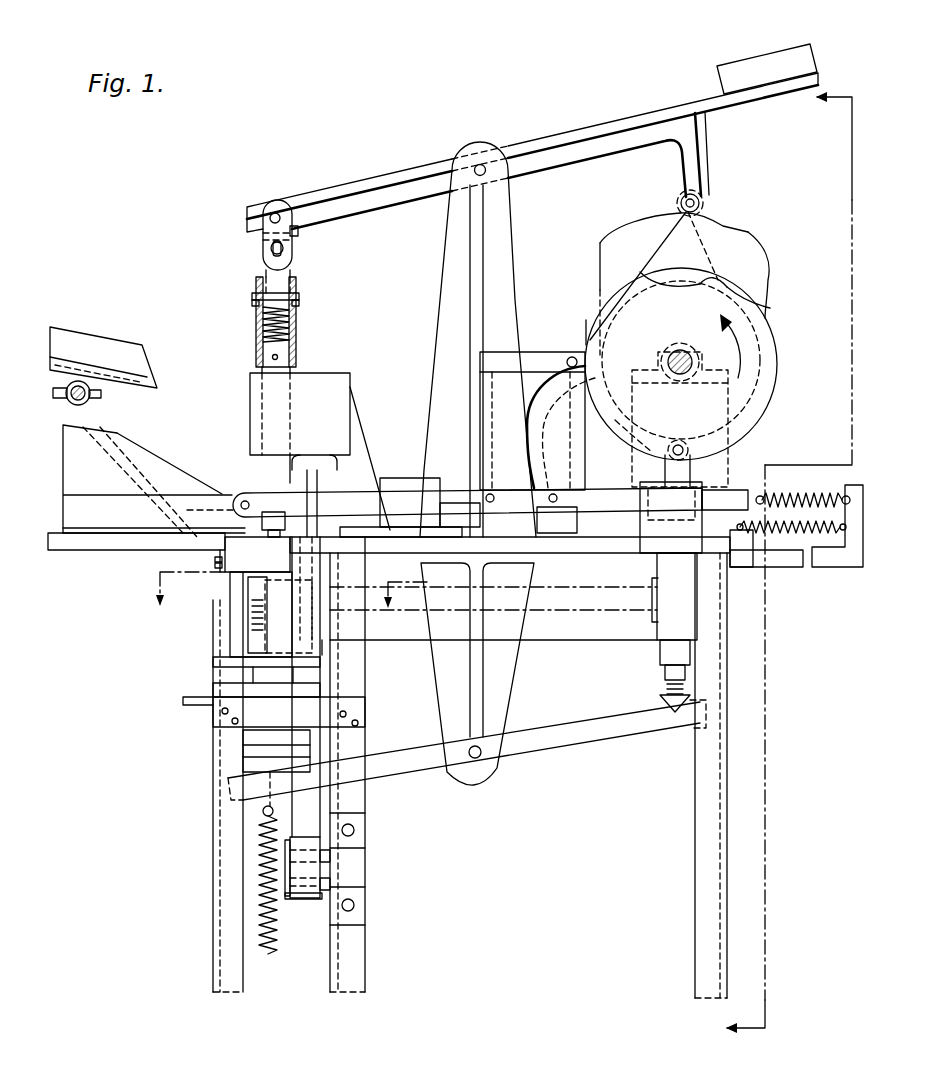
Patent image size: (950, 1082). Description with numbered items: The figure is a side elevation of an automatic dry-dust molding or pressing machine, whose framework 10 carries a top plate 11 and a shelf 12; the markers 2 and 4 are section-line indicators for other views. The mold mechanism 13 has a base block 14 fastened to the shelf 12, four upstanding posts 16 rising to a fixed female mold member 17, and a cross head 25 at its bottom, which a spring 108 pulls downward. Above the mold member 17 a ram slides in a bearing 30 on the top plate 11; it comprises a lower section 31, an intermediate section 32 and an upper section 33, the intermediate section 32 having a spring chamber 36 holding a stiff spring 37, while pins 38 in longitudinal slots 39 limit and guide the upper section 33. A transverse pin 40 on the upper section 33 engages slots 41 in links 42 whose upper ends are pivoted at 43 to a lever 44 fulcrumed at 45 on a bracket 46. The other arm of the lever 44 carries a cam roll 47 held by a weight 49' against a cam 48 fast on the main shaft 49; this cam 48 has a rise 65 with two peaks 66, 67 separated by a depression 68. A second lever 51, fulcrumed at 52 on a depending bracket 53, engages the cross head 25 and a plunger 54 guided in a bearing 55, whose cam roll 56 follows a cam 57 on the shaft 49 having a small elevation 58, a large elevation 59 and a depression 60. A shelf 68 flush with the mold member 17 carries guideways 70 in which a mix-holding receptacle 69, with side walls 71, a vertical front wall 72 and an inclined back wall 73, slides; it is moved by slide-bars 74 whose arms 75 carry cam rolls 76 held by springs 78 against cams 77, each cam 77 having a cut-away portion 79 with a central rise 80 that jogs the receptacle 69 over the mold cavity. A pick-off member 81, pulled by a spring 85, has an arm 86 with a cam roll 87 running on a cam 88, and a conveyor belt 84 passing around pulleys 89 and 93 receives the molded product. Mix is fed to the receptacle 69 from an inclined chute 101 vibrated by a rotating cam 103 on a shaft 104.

The section line 2- 2 is at (791, 564).
The section line 4- 4 is at (278, 581).
The framework 10 is at (718, 747).
The top plate 11 is at (633, 548).
The shelf 12 is at (217, 690).
The mold mechanism 13 is at (218, 617).
The base block 14 is at (215, 665).
The upstanding posts 16 is at (230, 590).
The female mold member 17 is at (252, 555).
The cross head 25 is at (245, 750).
The bearing 30 is at (320, 451).
The lower ram section 31 is at (290, 530).
The intermediate ram section 32 is at (310, 455).
The upper ram section 33 is at (296, 262).
The spring chamber 36 is at (298, 327).
The stiff spring 37 is at (258, 323).
The pins 38 is at (300, 296).
The longitudinal slots 39 is at (299, 305).
The transverse pin 40 is at (265, 242).
The slots 41 is at (270, 251).
The links 42 is at (300, 233).
The pivotal connection 43 is at (277, 213).
The lever 44 is at (378, 171).
The fulcrum 45 is at (481, 164).
The upstanding bracket 46 is at (448, 235).
The cam roll 47 is at (707, 202).
The cam 48 is at (676, 246).
The main shaft 49 is at (680, 344).
The weight 49' is at (767, 53).
The lever 51 is at (408, 765).
The fulcrum 52 is at (475, 760).
The bracket 53 is at (512, 663).
The plunger 54 is at (663, 660).
The bearing 55 is at (677, 590).
The cam roll 56 is at (683, 443).
The cam 57 is at (779, 363).
The small rise 58 is at (653, 430).
The large rise 59 is at (598, 403).
The depression 60 is at (630, 423).
The rise 65 is at (662, 239).
The peak 66 is at (680, 210).
The peak 67 is at (750, 221).
The shelf 68 is at (722, 220).
The mix holding receptacle 69 is at (147, 479).
The guideways 70 is at (154, 517).
The side walls 71 is at (158, 452).
The vertical front wall 72 is at (263, 510).
The inclined back wall 73 is at (103, 443).
The slide bars 74 is at (372, 485).
The upwardly extending arm 75 is at (497, 385).
The cam roll 76 is at (578, 357).
The cam 77 is at (592, 320).
The spring 78 is at (800, 497).
The cut away portion 79 is at (690, 286).
The rise 80 is at (727, 290).
The pick-off member 81 is at (741, 548).
The conveyor belt 84 is at (313, 823).
The spring 85 is at (829, 535).
The upwardly extending arm 86 is at (553, 487).
The cam roll 87 is at (668, 353).
The cam 88 is at (604, 252).
The pulley 89 is at (325, 648).
The pulley 93 is at (287, 900).
The inclined chute 101 is at (157, 336).
The rotating cam 103 is at (57, 378).
The shaft 104 is at (80, 385).
The spring 108 is at (268, 955).